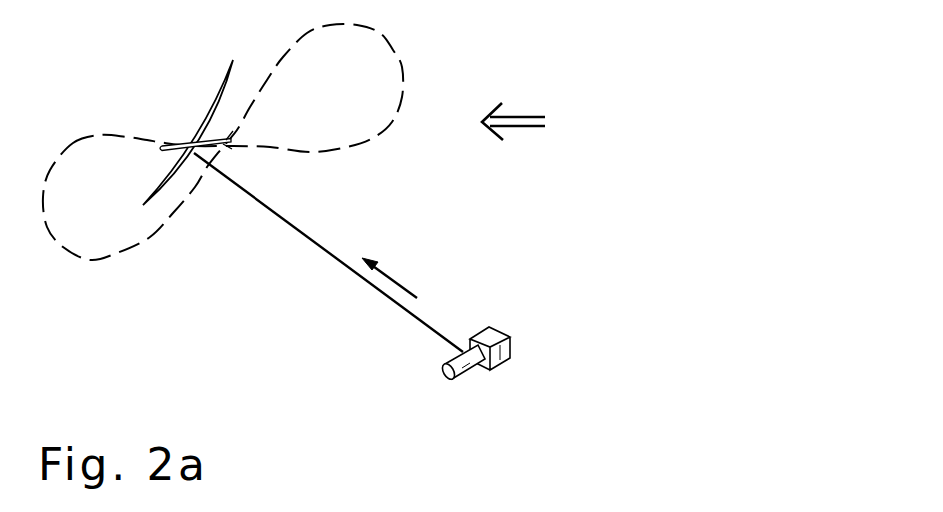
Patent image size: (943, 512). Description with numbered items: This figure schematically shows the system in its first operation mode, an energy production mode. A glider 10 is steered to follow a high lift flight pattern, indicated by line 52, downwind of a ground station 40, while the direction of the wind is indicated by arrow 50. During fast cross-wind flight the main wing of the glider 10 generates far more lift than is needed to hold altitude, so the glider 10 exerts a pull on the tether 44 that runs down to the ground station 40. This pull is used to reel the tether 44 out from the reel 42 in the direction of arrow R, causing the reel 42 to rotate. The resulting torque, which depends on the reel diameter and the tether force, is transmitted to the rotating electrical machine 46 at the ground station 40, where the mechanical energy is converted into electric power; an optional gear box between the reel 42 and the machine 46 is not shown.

The glider 10 is at (197, 124).
The line indicating high lift flight pattern 52 is at (381, 40).
The arrow indicating direction of wind 50 is at (513, 135).
The tether 44 is at (282, 222).
The arrow indicating reel-out direction R is at (398, 280).
The ground station 40 is at (458, 384).
The reel 42 is at (458, 372).
The rotating electrical machine 46 is at (508, 345).